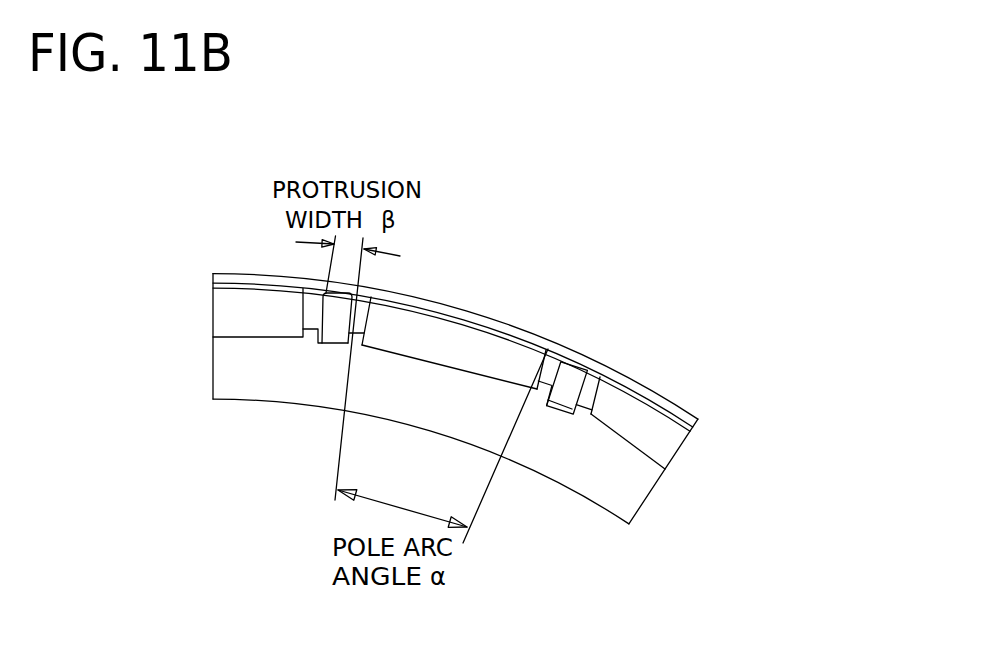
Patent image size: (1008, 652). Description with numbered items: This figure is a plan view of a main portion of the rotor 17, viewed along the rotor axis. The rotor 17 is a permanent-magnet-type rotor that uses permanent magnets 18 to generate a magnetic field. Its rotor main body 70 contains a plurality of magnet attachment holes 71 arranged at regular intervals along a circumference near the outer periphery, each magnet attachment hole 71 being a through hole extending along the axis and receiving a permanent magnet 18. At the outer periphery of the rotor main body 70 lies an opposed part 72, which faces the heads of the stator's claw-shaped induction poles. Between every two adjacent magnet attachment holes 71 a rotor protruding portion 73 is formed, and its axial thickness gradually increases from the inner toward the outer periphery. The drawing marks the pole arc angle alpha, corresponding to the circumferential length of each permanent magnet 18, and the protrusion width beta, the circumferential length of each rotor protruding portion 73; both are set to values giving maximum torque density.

The rotor 17 is at (702, 295).
The permanent magnet 18 is at (468, 343).
The rotor main body 70 is at (622, 492).
The magnet attachment hole 71 is at (553, 353).
The opposed part 72 is at (441, 297).
The rotor protruding portion 73 is at (580, 375).